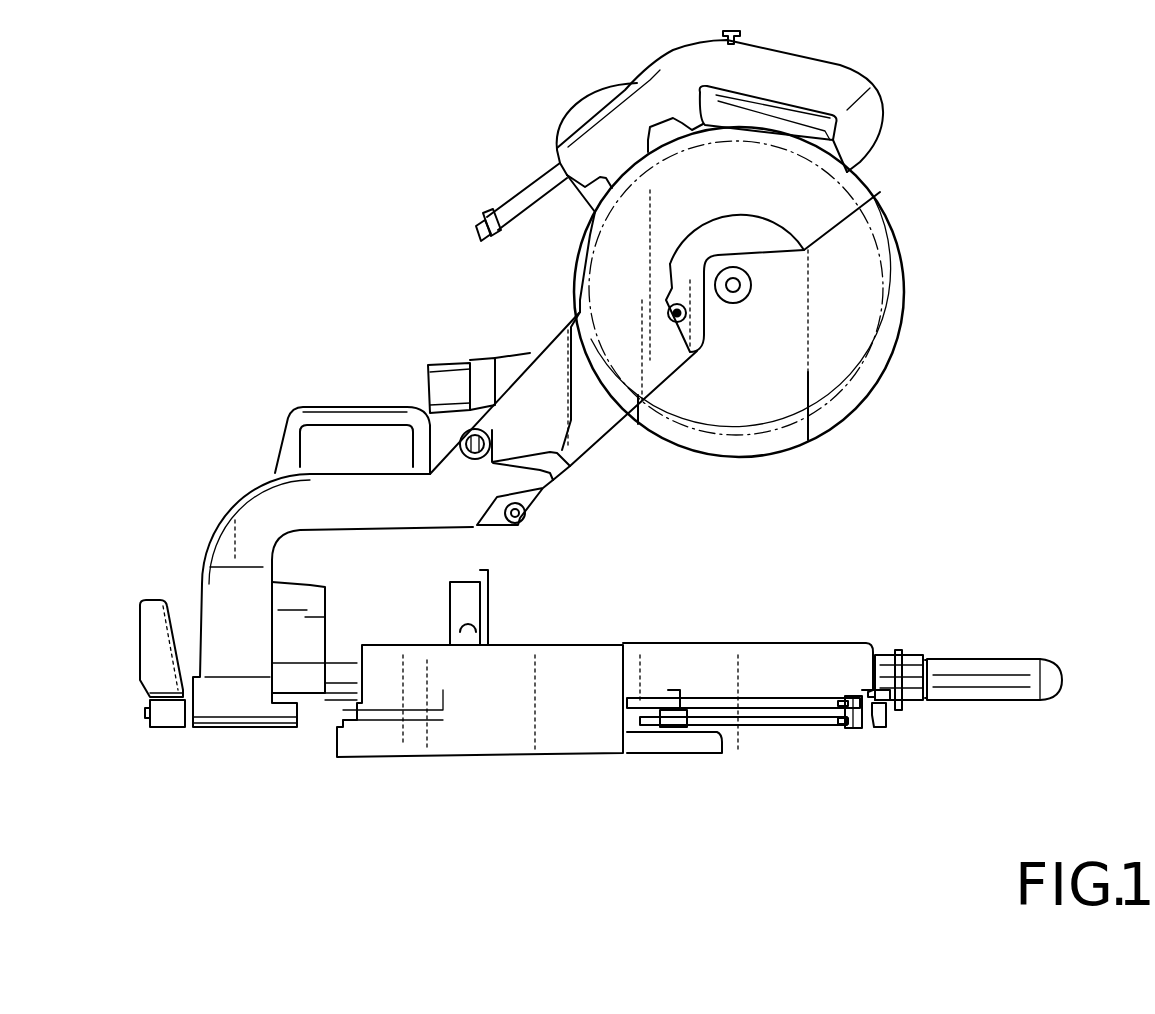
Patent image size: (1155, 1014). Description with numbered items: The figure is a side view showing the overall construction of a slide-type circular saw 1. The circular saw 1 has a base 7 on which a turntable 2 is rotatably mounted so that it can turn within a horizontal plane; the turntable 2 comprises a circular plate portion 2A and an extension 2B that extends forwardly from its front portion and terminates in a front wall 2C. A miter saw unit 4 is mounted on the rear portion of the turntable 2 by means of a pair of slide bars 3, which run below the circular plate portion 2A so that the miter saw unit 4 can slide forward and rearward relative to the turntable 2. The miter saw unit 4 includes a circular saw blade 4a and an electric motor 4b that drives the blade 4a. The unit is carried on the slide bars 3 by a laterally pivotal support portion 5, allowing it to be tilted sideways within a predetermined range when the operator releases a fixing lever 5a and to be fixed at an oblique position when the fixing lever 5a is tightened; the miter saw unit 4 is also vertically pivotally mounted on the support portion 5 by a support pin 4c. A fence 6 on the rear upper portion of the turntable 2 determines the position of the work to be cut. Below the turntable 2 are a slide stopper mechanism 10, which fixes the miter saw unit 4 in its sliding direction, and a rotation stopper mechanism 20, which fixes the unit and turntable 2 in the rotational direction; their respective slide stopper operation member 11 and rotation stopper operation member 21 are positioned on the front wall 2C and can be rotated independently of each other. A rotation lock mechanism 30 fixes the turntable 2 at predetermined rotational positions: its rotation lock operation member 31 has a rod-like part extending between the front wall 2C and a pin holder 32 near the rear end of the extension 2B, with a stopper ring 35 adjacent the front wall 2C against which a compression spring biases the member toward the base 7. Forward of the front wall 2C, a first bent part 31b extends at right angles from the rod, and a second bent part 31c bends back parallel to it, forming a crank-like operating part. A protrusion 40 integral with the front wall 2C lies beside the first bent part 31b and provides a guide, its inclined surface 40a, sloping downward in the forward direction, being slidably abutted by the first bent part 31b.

The slide-type circular saw 1 is at (856, 482).
The turntable 2 is at (643, 598).
The circular plate portion 2A is at (547, 643).
The extension 2B is at (715, 642).
The front wall 2C is at (888, 680).
The slide bars 3 is at (340, 673).
The miter saw unit 4 is at (400, 373).
The circular saw blade 4a is at (876, 239).
The electric motor 4b is at (572, 123).
The support pin 4c is at (467, 430).
The laterally pivotal support portion 5 is at (232, 734).
The fixing lever 5a is at (148, 638).
The fence 6 is at (488, 603).
The base 7 is at (567, 710).
The slide stopper mechanism 10 is at (964, 645).
The slide stopper operation member 11 is at (915, 650).
The rotation stopper mechanism 20 is at (1018, 646).
The rotation stopper operation member 21 is at (1017, 655).
The rotation lock mechanism 30 is at (770, 733).
The rotation lock operation member 31 is at (777, 717).
The first bent part 31b is at (885, 708).
The second bent part 31c is at (880, 667).
The pin holder 32 is at (690, 693).
The stopper ring 35 is at (847, 700).
The protrusion 40 is at (870, 683).
The inclined surface 40a is at (913, 697).